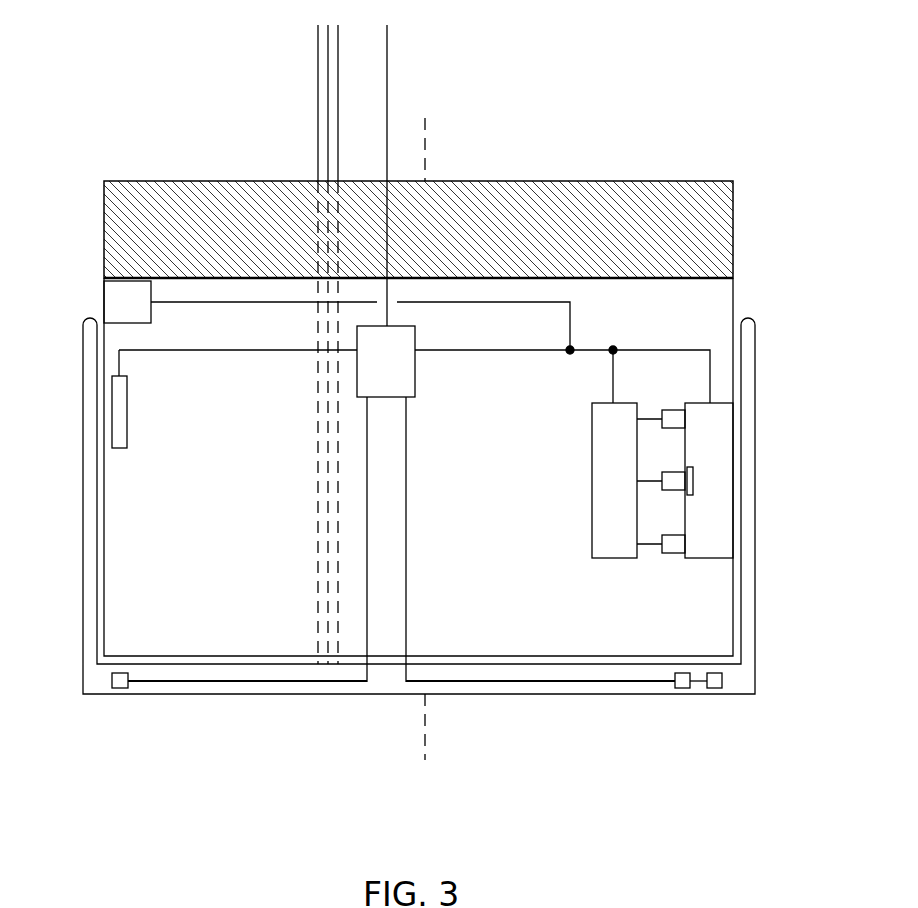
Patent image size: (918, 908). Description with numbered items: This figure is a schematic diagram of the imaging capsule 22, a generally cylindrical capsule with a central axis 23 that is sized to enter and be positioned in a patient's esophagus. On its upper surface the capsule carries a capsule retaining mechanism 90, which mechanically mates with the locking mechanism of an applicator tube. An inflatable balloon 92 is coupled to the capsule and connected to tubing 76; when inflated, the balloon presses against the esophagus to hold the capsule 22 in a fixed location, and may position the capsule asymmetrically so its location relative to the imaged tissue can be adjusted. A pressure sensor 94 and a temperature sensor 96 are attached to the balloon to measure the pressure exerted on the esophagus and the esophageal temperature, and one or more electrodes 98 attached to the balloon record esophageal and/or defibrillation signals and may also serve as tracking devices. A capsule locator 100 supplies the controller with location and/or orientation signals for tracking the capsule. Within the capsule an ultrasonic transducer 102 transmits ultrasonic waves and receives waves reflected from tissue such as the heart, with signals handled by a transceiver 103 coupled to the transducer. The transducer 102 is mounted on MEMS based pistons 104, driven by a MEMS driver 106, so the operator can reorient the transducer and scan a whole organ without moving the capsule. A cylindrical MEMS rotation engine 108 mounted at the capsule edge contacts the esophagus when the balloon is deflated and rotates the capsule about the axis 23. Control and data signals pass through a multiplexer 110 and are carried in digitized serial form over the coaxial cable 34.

The imaging capsule 22 is at (733, 322).
The central axis 23 is at (425, 143).
The cable 34 is at (389, 33).
The tubing 76 is at (318, 77).
The capsule retaining mechanism 90 is at (733, 195).
The inflatable balloon 92 is at (497, 694).
The pressure sensor 94 is at (683, 688).
The temperature sensor 96 is at (720, 678).
The electrodes 98 is at (120, 688).
The capsule locator 100 is at (127, 417).
The ultrasonic transducer 102 is at (728, 527).
The transceiver 103 is at (693, 487).
The MEMS based pistons 104 is at (680, 418).
The MEMS driver 106 is at (635, 402).
The MEMS rotation engine 108 is at (110, 294).
The multiplexer 110 is at (415, 375).